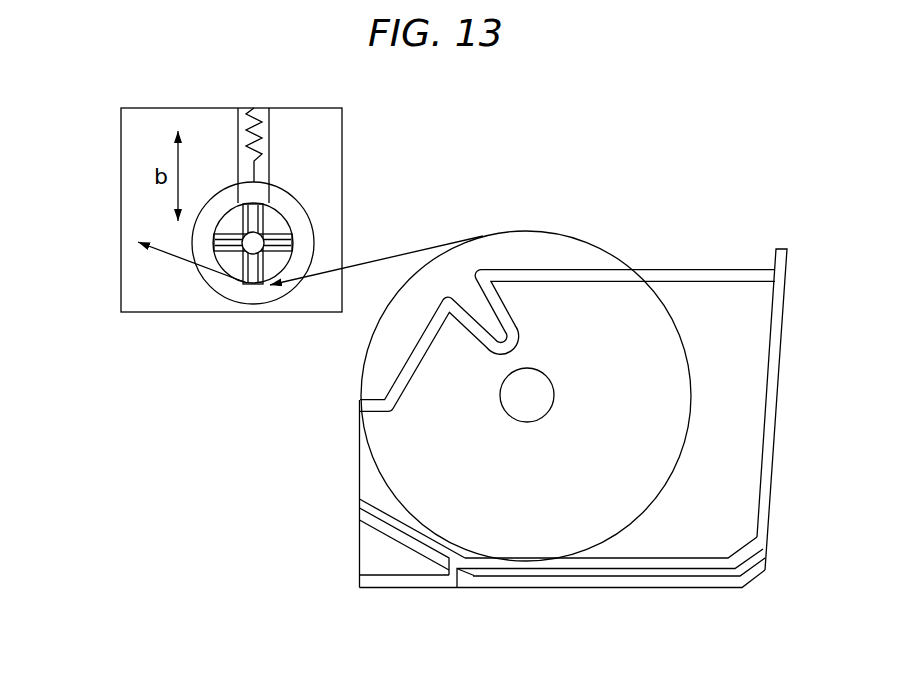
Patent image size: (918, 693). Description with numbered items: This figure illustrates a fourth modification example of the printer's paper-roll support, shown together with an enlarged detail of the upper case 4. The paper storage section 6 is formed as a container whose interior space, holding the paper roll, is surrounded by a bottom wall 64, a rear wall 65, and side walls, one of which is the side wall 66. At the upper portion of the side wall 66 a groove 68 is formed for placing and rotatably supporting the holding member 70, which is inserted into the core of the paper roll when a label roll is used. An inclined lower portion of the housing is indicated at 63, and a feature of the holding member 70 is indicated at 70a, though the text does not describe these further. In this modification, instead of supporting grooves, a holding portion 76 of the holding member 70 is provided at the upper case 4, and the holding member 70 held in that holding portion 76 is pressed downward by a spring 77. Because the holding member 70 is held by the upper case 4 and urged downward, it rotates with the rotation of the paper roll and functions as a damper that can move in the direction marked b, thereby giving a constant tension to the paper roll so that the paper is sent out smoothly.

The upper case 4 is at (342, 134).
The paper storage section 6 is at (604, 392).
The inclined wall portion 63 is at (390, 509).
The bottom wall 64 is at (632, 553).
The rear wall 65 is at (763, 320).
The side wall 66 is at (752, 292).
The groove 68 is at (478, 274).
The holding member 70 is at (169, 290).
The roller rib 70a is at (213, 245).
The holding portion 76 is at (263, 109).
The spring 77 is at (264, 163).